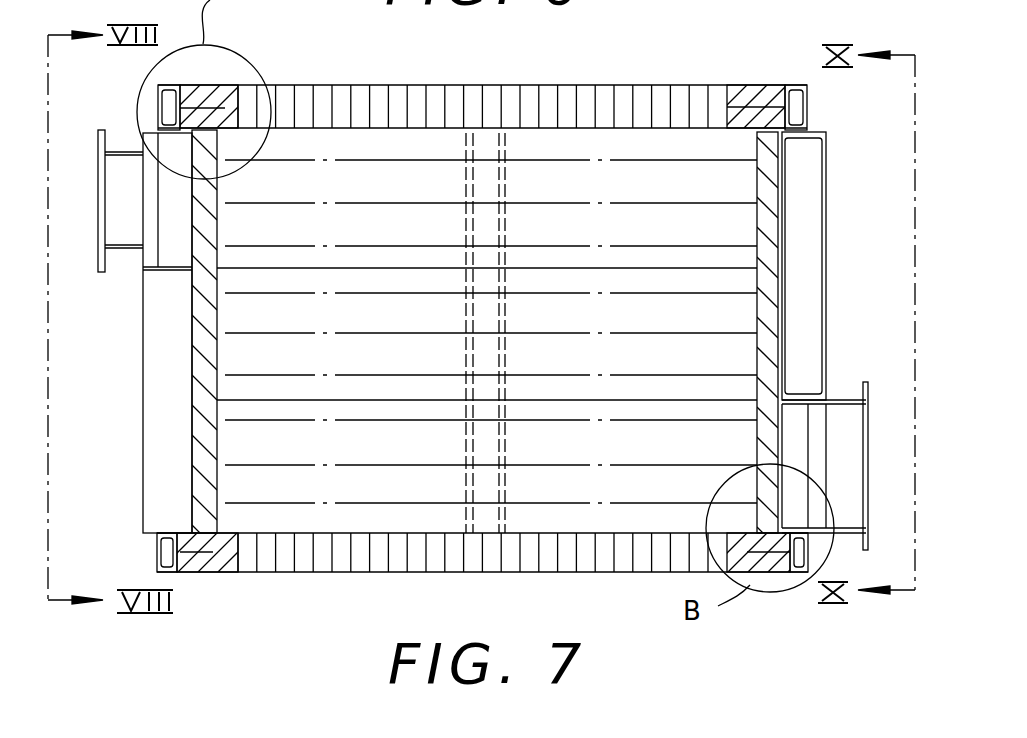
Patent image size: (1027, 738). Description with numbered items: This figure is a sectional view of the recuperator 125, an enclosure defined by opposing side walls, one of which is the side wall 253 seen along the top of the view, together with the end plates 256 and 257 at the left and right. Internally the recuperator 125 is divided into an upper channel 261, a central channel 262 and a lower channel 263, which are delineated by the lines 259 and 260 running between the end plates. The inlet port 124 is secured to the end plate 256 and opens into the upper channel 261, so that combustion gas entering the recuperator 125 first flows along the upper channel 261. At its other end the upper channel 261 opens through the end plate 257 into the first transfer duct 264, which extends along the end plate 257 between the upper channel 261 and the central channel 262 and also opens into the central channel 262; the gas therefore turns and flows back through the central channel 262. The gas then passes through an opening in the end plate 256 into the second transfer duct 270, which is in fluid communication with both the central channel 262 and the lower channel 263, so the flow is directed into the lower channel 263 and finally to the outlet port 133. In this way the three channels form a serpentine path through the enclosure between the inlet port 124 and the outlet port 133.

The inlet port 124 is at (120, 150).
The recuperator 125 is at (710, 78).
The outlet port 133 is at (846, 400).
The side wall 253 is at (492, 105).
The end plate 256 is at (198, 330).
The end plate 257 is at (766, 297).
The line 259 is at (530, 268).
The line 260 is at (575, 400).
The upper channel 261 is at (491, 203).
The central channel 262 is at (491, 334).
The lower channel 263 is at (491, 461).
The first transfer duct 264 is at (805, 192).
The second transfer duct 270 is at (158, 422).